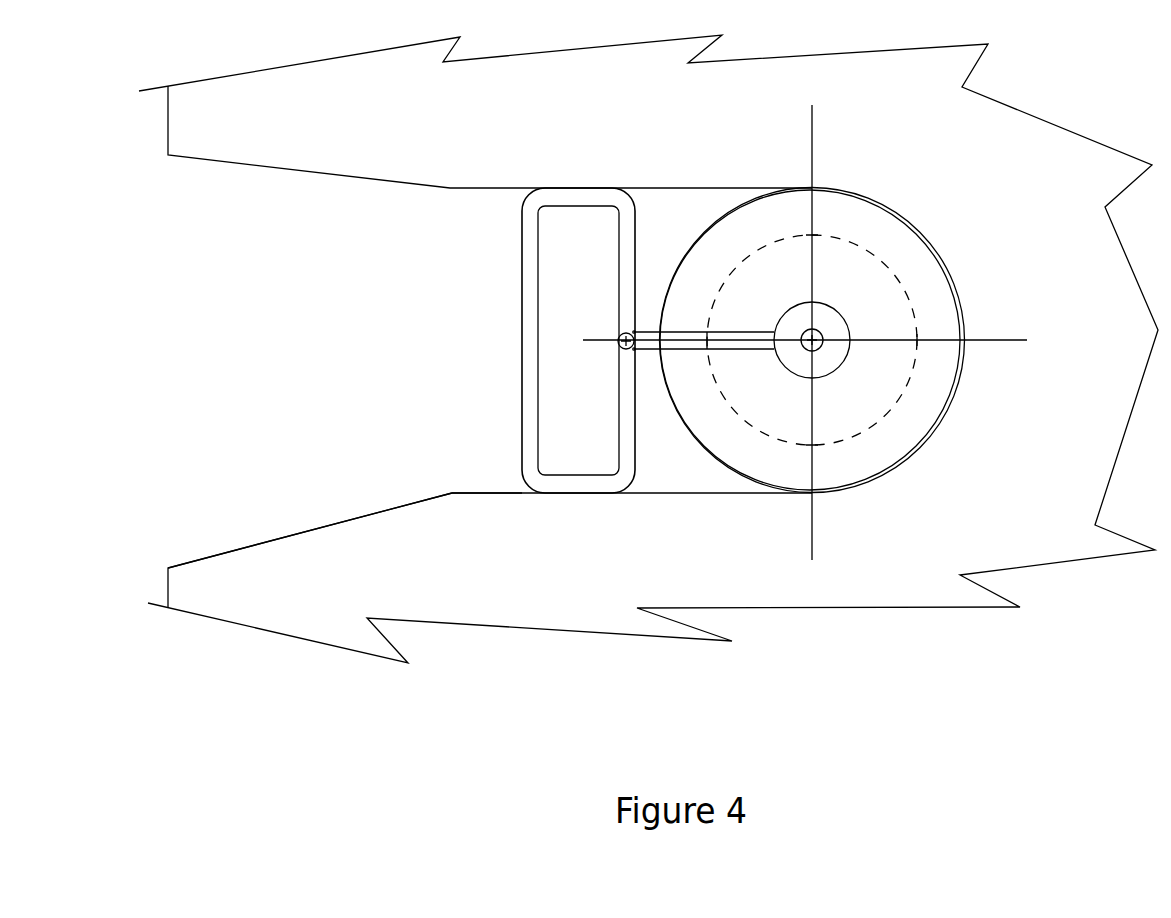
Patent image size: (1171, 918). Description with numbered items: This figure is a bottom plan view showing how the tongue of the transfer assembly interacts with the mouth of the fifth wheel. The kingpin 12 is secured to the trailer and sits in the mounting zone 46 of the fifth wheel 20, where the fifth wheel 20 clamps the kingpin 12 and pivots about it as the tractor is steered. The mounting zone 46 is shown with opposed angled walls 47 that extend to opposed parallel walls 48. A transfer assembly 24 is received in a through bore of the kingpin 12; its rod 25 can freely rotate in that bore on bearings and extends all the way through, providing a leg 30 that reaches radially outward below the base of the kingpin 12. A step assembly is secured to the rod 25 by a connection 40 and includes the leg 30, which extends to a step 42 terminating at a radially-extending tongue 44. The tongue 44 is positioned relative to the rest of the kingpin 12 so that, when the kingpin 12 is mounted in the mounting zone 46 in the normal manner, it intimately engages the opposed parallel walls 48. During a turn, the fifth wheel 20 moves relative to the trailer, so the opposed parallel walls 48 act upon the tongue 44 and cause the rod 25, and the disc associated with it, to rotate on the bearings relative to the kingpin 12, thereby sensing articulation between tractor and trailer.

The kingpin 12 is at (893, 243).
The fifth wheel 20 is at (1040, 180).
The transfer assembly 24 is at (647, 357).
The rod 25 is at (818, 337).
The leg 30 is at (690, 335).
The connection 40 is at (830, 360).
The step 42 is at (620, 345).
The tongue 44 is at (602, 193).
The mounting zone 46 is at (342, 333).
The opposed angled walls 47 is at (360, 517).
The opposed parallel walls 48 is at (500, 492).